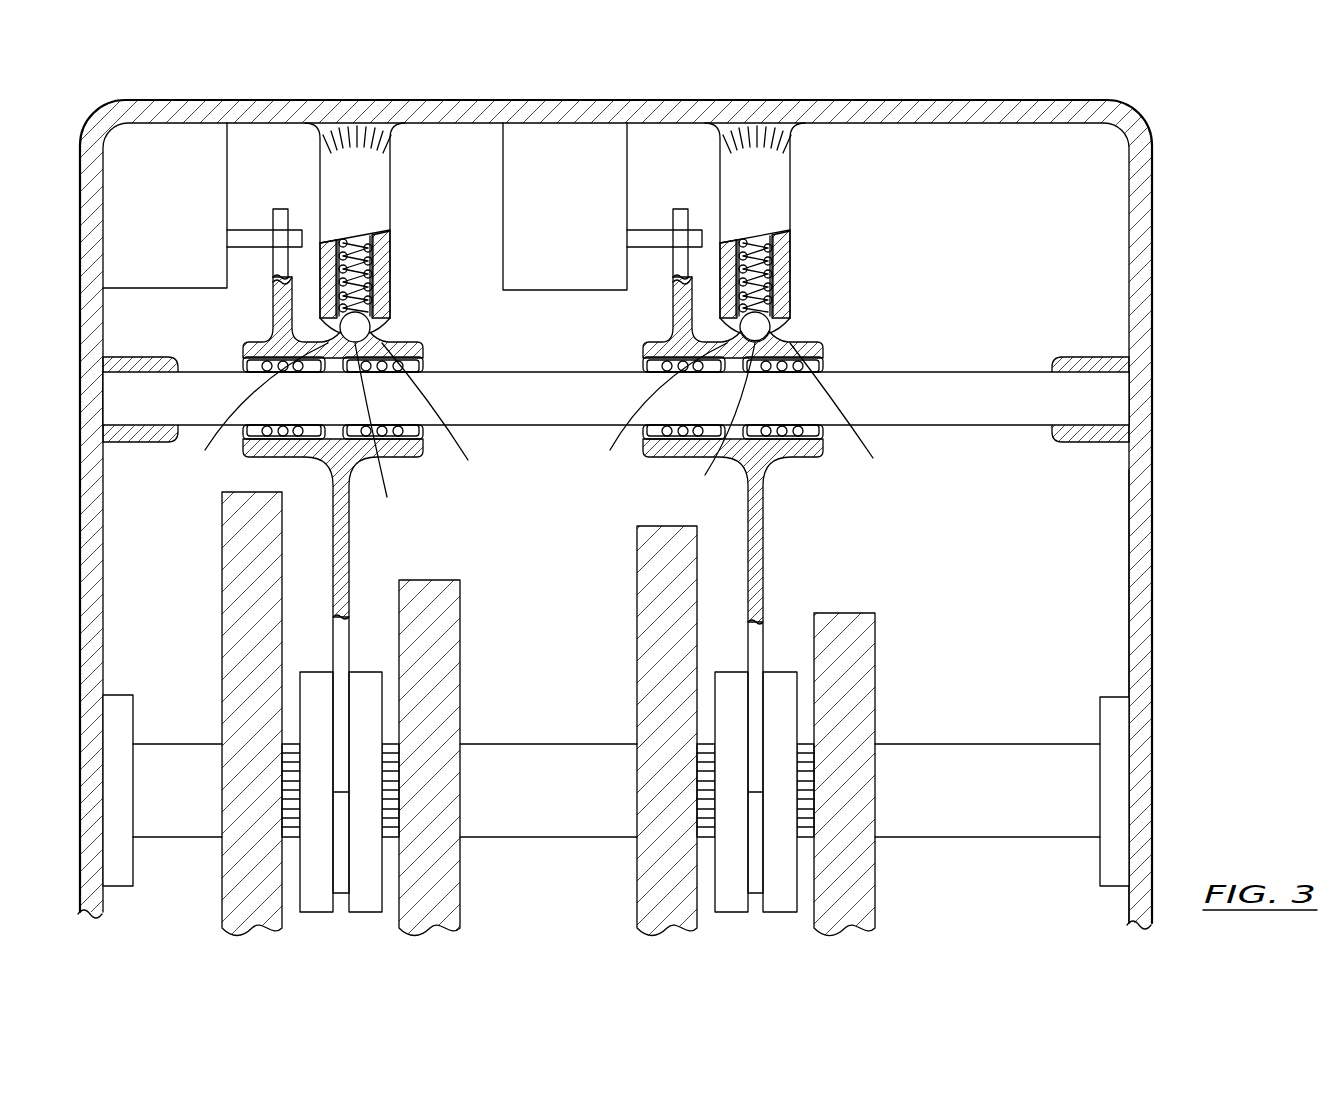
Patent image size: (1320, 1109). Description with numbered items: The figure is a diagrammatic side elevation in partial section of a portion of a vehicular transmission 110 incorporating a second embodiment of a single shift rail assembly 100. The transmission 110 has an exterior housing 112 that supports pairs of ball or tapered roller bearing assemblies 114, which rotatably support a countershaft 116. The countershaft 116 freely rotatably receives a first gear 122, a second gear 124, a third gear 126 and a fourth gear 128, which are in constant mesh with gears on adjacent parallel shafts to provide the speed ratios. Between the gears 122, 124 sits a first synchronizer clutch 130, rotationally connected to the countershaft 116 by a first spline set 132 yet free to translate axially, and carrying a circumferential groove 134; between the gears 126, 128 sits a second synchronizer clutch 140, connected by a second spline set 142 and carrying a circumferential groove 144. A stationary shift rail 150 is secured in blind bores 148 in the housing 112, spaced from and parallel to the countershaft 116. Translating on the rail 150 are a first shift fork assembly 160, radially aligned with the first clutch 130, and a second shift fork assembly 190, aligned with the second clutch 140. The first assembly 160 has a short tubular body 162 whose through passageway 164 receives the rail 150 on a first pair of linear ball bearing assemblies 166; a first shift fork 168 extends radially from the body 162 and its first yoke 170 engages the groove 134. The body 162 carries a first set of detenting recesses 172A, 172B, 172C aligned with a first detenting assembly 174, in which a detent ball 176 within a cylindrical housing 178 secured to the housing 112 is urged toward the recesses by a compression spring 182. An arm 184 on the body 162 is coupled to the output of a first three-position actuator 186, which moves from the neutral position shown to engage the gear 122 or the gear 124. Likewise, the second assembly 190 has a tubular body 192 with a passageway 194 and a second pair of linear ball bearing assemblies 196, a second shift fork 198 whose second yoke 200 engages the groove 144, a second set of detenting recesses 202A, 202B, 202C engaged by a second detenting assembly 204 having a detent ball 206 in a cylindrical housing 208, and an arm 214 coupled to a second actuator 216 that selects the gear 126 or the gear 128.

The single shift rail assembly 100 is at (670, 509).
The vehicular transmission 110 is at (660, 514).
The exterior housing 112 is at (1143, 466).
The ball or tapered roller bearing assemblies 114 is at (128, 697).
The countershaft 116 is at (997, 758).
The first gear 122 is at (250, 592).
The second gear 124 is at (452, 665).
The third gear 126 is at (650, 656).
The fourth gear 128 is at (868, 690).
The first synchronizer clutch 130 is at (332, 752).
The first interengaging male and female spline set 132 is at (290, 747).
The circumferential channel or groove 134 is at (342, 897).
The second synchronizer clutch 140 is at (752, 753).
The second interengaging male and female spline set 142 is at (708, 747).
The circumferential channel or groove 144 is at (757, 897).
The blind openings or bores 148 is at (147, 376).
The stationary shift rail 150 is at (977, 375).
The first shift fork assembly 160 is at (342, 281).
The first cylindrical or tubular body 162 is at (358, 450).
The through passageway 164 is at (433, 367).
The first pair of linear ball bearing assemblies 166 is at (258, 368).
The first shift fork 168 is at (342, 640).
The first yoke 170 is at (342, 692).
The first detenting recess 172A is at (250, 414).
The first detenting recess 172B is at (382, 434).
The first detenting recess 172C is at (443, 415).
The first detenting assembly 174 is at (410, 136).
The detent ball 176 is at (357, 325).
The cylindrical housing 178 is at (336, 193).
The compression spring 182 is at (358, 242).
The arm or extension 184 is at (279, 213).
The first actuator or operator 186 is at (147, 203).
The second shift fork assembly 190 is at (771, 313).
The second cylindrical or tubular body 192 is at (750, 455).
The through passageway 194 is at (832, 367).
The second pair of linear ball bearing assemblies 196 is at (812, 364).
The second shift fork 198 is at (765, 637).
The second yoke 200 is at (755, 730).
The second detenting recess 202A is at (646, 409).
The second detenting recess 202B is at (715, 424).
The second detenting recess 202C is at (848, 414).
The second detenting assembly 204 is at (822, 144).
The detent ball 206 is at (757, 325).
The cylindrical housing 208 is at (738, 198).
The arm or extension 214 is at (680, 213).
The second actuator or operator 216 is at (550, 203).